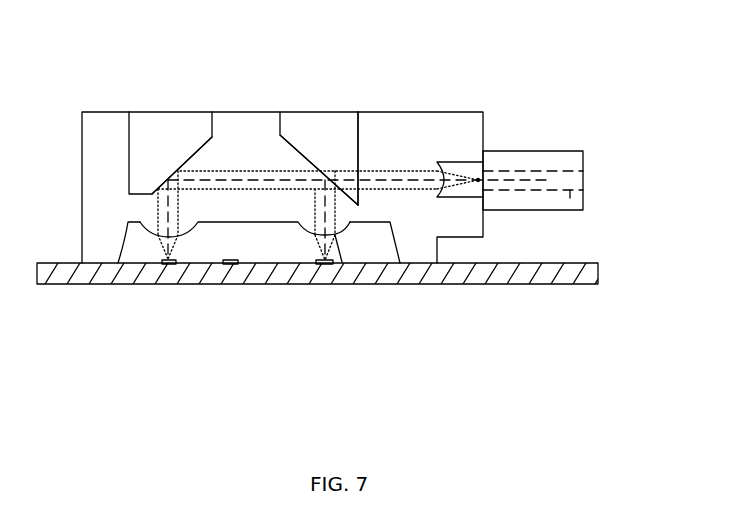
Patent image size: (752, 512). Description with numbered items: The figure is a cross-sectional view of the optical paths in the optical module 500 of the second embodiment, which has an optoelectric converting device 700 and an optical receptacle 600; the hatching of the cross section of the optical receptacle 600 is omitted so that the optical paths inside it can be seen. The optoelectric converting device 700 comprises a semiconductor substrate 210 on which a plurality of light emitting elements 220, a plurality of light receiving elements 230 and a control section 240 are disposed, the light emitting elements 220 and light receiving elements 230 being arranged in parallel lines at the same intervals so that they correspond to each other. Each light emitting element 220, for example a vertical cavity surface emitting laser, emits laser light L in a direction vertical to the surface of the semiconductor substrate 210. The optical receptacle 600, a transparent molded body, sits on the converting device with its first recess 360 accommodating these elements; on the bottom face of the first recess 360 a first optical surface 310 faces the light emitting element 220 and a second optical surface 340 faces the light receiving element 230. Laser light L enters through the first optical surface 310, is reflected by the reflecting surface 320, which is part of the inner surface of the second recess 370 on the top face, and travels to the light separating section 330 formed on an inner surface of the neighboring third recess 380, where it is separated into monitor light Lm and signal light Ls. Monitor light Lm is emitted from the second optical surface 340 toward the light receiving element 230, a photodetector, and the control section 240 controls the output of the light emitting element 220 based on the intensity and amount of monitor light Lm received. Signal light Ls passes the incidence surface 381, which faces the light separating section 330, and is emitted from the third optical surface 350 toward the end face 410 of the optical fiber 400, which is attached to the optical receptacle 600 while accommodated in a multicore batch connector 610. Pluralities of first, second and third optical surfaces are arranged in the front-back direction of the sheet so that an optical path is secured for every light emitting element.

The optical module 500 is at (667, 25).
The second recess 370 is at (185, 99).
The third recess 380 is at (323, 99).
The reflecting surface 320 is at (198, 152).
The light separating section 330 is at (293, 152).
The incidence surface 381 is at (358, 149).
The third optical surface 350 is at (440, 164).
The signal light Ls is at (381, 171).
The laser light L is at (158, 213).
The monitor light Lm is at (342, 262).
The first optical surface 310 is at (140, 222).
The second optical surface 340 is at (312, 230).
The first recess 360 is at (392, 281).
The light emitting element 220 is at (172, 267).
The control section 240 is at (235, 267).
The light receiving element 230 is at (325, 264).
The semiconductor substrate 210 is at (52, 278).
The optical receptacle 600 is at (494, 97).
The multicore batch connector 610 is at (560, 152).
The end face 410 is at (478, 182).
The optical fiber 400 is at (569, 198).
The optoelectric converting device 700 is at (622, 303).